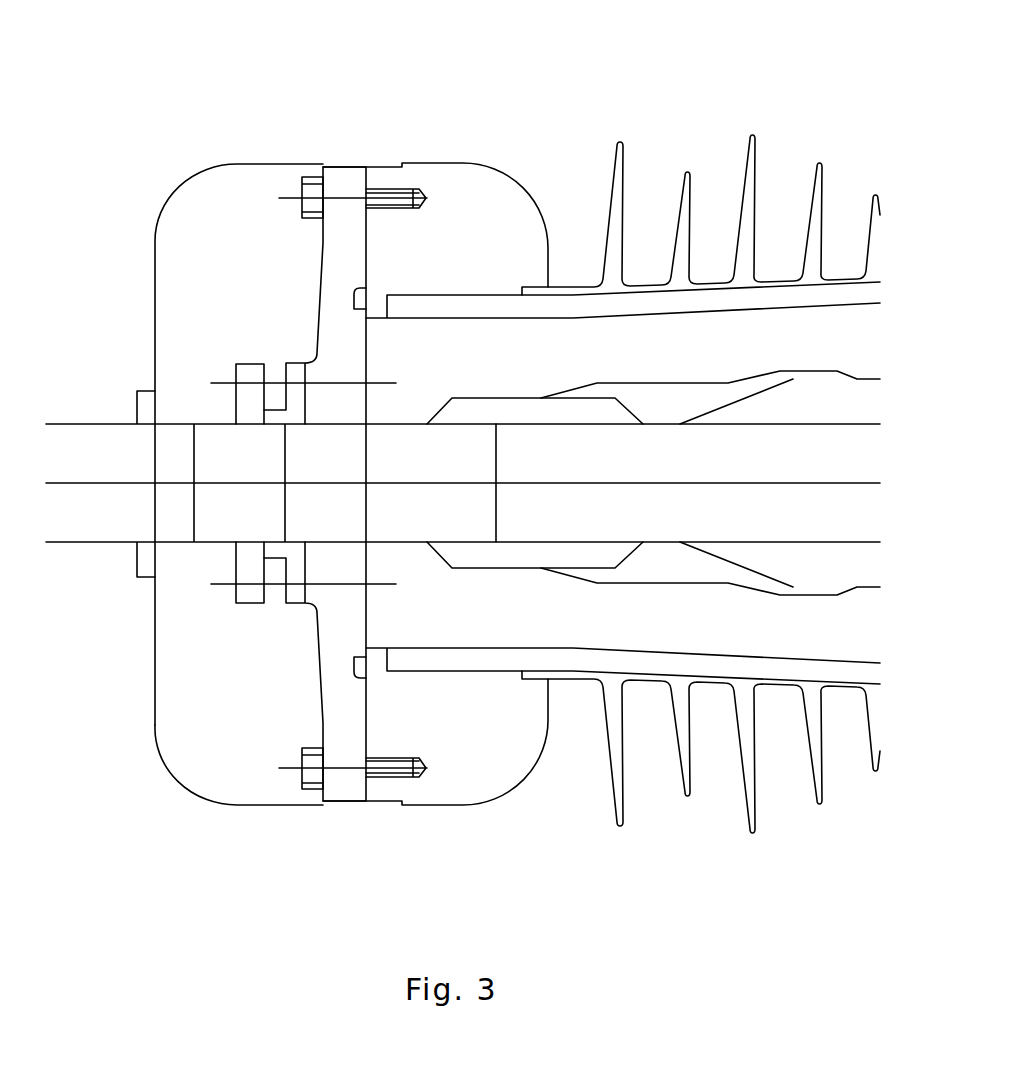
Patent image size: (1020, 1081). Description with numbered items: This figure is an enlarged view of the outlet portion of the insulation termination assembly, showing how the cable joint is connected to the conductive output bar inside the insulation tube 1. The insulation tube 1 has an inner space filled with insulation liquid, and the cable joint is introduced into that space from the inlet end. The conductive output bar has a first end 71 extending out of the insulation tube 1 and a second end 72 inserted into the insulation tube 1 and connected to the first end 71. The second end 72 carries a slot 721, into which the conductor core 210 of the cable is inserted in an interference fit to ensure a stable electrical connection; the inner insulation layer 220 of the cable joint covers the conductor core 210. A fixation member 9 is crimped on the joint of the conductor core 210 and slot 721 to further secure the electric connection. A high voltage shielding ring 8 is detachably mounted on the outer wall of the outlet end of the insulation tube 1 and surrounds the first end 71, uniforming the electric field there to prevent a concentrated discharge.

The insulation tube 1 is at (710, 662).
The high voltage shielding ring 8 is at (243, 200).
The fixation member 9 is at (672, 403).
The first end 71 is at (93, 525).
The second end 72 is at (469, 540).
The slot 721 is at (578, 423).
The conductor core 210 is at (570, 510).
The inner insulation layer 220 is at (847, 563).